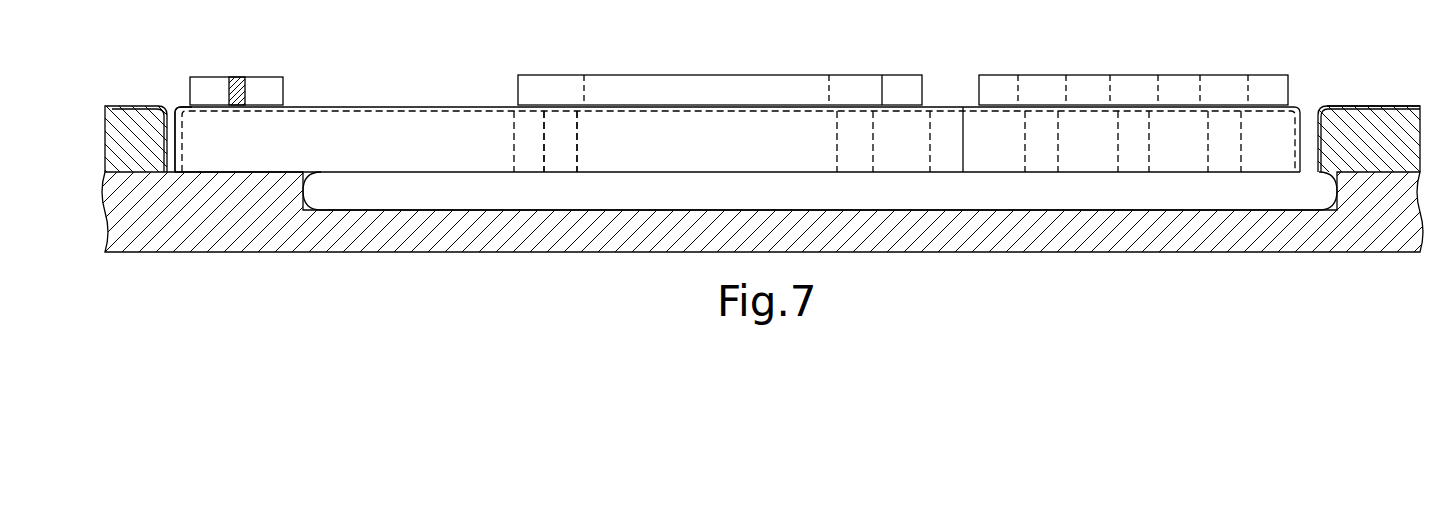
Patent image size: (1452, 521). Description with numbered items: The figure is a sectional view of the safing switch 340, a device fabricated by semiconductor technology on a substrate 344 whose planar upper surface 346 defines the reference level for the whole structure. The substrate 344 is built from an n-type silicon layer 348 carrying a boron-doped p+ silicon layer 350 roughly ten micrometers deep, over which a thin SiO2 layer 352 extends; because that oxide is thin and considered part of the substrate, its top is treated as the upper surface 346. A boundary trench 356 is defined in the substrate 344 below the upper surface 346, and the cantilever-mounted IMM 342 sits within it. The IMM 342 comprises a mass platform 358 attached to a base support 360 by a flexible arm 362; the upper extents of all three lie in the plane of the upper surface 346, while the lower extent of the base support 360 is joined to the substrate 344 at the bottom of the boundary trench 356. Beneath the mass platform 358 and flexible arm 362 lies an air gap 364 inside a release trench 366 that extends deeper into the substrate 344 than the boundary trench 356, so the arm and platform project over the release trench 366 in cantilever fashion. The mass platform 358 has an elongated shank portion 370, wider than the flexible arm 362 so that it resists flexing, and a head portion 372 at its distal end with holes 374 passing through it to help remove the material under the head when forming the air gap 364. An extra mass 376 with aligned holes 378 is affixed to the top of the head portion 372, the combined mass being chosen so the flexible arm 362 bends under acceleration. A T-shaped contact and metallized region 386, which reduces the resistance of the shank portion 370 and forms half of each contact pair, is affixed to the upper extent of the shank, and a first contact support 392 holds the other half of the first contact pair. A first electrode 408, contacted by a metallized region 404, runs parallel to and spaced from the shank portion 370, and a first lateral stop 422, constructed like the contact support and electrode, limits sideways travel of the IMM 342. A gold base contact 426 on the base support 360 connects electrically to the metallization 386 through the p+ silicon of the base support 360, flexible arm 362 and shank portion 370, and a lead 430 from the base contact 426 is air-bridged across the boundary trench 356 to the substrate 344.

The safing switch 340 is at (238, 22).
The IMM 342 is at (447, 65).
The substrate 344 is at (135, 254).
The upper surface 346 is at (118, 108).
The n-type silicon layer 348 is at (1377, 235).
The p+ silicon layer 350 is at (1370, 109).
The SiO2 layer 352 is at (1373, 115).
The boundary trench 356 is at (1308, 92).
The mass platform 358 is at (965, 117).
The base support 360 is at (192, 127).
The flexible arm 362 is at (402, 127).
The air gap 364 is at (858, 214).
The release trench 366 is at (973, 209).
The shank portion 370 is at (566, 170).
The head portion 372 is at (1262, 158).
The holes 374 is at (1120, 146).
The extra mass 376 is at (1130, 80).
The holes 378 is at (1018, 90).
The contact and metallized region 386 is at (531, 85).
The first contact support 392 is at (871, 147).
The metallized region 404 is at (584, 92).
The first electrode 408 is at (576, 138).
The first lateral stop 422 is at (514, 134).
The base contact 426 is at (278, 88).
The lead 430 is at (246, 92).